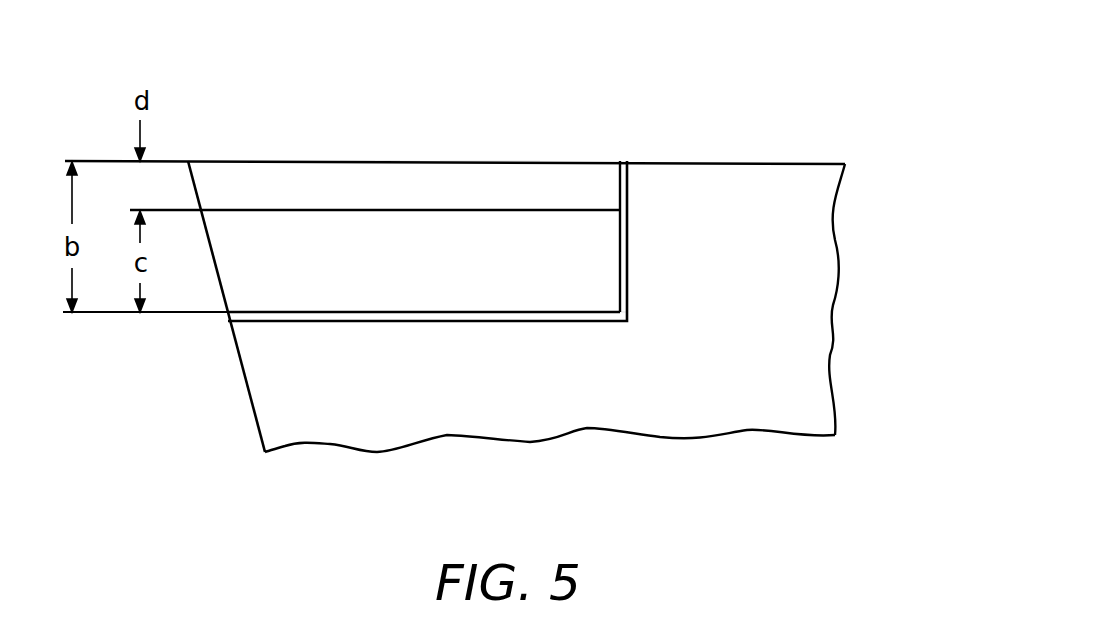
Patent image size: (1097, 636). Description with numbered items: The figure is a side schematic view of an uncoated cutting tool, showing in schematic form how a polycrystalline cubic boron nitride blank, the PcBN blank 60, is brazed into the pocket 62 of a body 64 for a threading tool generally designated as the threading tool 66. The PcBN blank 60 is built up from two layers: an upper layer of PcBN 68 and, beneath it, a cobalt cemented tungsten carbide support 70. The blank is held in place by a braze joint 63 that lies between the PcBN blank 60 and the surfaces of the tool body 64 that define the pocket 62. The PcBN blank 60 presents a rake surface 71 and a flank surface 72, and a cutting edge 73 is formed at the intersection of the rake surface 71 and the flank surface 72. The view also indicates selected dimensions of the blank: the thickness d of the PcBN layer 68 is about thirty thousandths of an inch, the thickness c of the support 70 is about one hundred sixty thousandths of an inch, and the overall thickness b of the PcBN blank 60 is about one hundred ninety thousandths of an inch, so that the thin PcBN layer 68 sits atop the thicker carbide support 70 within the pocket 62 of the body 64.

The PcBN blank 60 is at (312, 160).
The pocket 62 is at (628, 227).
The braze joint 63 is at (622, 285).
The body 64 is at (787, 311).
The threading tool 66 is at (848, 70).
The layer of PcBN 68 is at (450, 183).
The cobalt cemented tungsten carbide support 70 is at (538, 235).
The rake surface 71 is at (372, 160).
The flank surface 72 is at (496, 182).
The cutting edge 73 is at (188, 162).